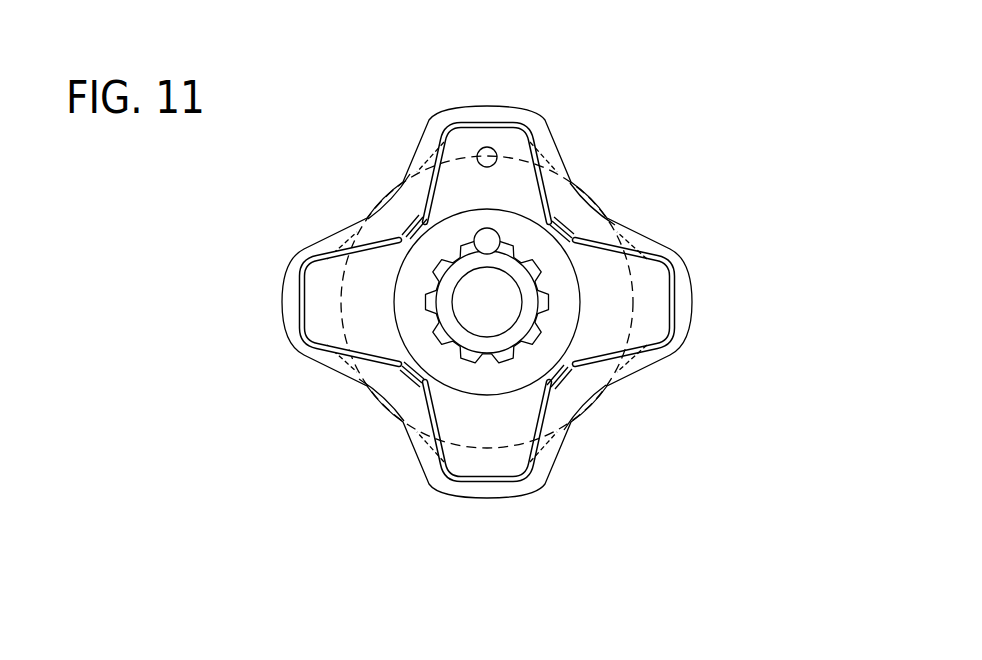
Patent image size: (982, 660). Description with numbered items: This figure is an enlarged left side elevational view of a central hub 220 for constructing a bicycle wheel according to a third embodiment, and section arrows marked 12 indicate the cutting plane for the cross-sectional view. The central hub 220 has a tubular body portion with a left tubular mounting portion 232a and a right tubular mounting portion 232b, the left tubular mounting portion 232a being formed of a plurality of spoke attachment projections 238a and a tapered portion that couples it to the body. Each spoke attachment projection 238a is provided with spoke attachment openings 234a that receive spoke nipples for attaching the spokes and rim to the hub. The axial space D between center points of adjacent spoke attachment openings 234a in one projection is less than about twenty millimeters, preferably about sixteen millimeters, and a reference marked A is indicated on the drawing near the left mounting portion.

The central hub 220 is at (662, 148).
The left tubular mounting portion 232a is at (702, 302).
The right tubular mounting portion 232b is at (499, 155).
The spoke attachment openings 234a is at (560, 423).
The spoke attachment projections 238a is at (680, 355).
The section line 12- 12 is at (488, 92).
The angle reference A is at (368, 293).
The axial space D is at (236, 253).